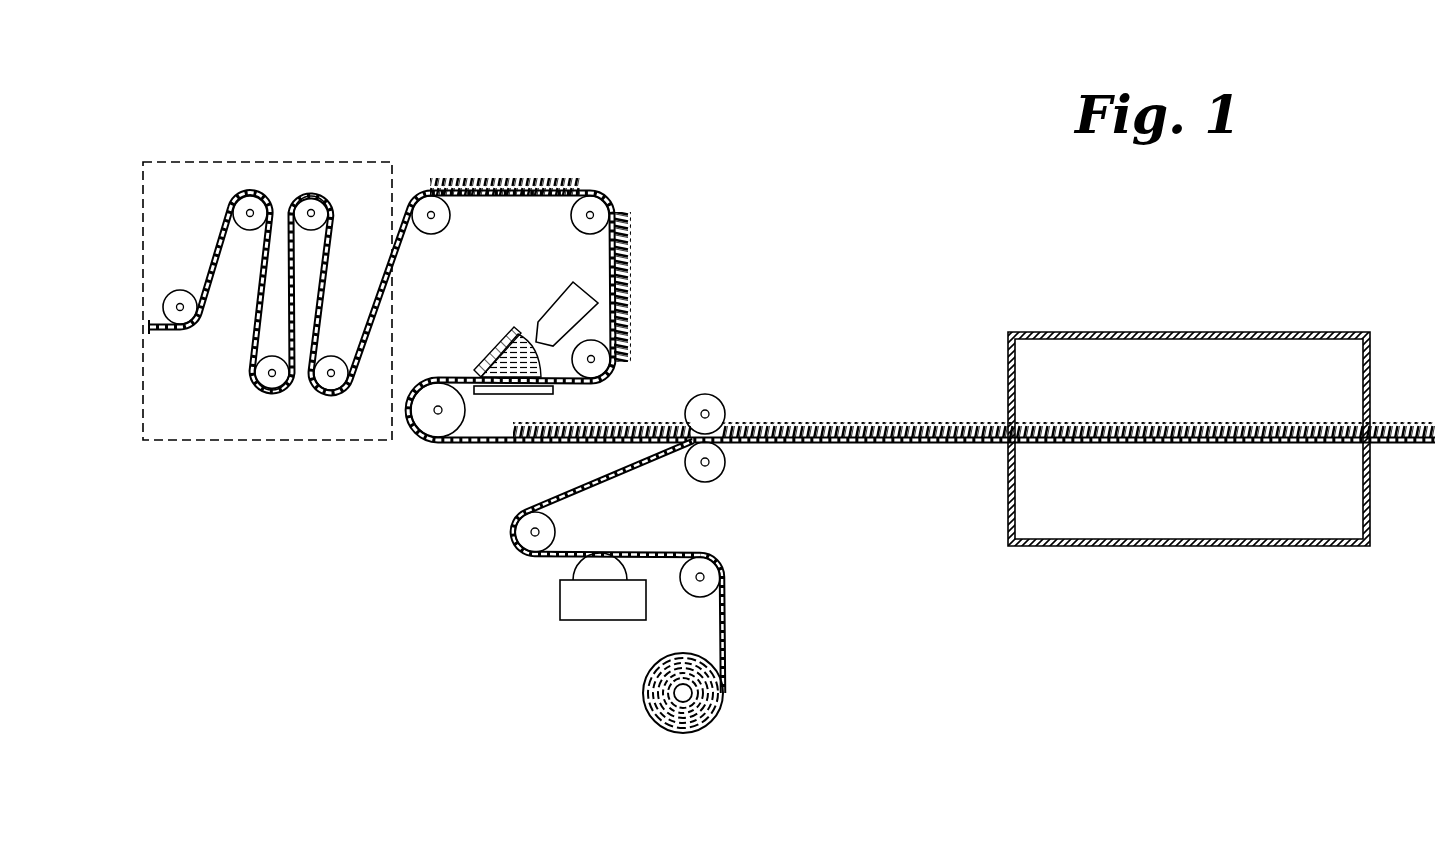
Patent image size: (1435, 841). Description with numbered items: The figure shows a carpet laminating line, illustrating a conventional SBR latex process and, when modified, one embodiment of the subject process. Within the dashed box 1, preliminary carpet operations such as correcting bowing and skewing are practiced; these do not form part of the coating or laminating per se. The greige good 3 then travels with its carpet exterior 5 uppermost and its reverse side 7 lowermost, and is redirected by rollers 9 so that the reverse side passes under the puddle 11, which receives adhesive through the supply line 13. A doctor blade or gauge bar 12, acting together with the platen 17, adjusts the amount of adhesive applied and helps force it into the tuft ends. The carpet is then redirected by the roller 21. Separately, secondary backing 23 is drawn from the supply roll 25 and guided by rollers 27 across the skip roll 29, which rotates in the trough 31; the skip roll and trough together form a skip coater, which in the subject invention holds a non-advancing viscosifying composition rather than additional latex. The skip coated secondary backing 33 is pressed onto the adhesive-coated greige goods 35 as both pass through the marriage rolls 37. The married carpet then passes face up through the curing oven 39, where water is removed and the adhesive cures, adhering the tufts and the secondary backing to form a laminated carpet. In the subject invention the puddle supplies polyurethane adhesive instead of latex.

The dashed box 1 is at (343, 157).
The greige good 3 is at (508, 173).
The carpet exterior 5 is at (580, 173).
The reverse side 7 is at (507, 199).
The rollers 9 is at (611, 215).
The puddle 11 is at (524, 376).
The doctor blade or gauge bar 12 is at (490, 354).
The supply line 13 is at (578, 298).
The platen 17 is at (478, 397).
The roller 21 is at (425, 427).
The secondary backing 23 is at (727, 625).
The supply roll 25 is at (727, 693).
The rollers 27 is at (542, 554).
The skip roll 29 is at (605, 553).
The trough 31 is at (573, 620).
The skip coated secondary backing 33 is at (612, 478).
The latex adhesive-coated greige goods 35 is at (601, 448).
The marriage rolls 37 is at (726, 410).
The curing oven 39 is at (1215, 517).